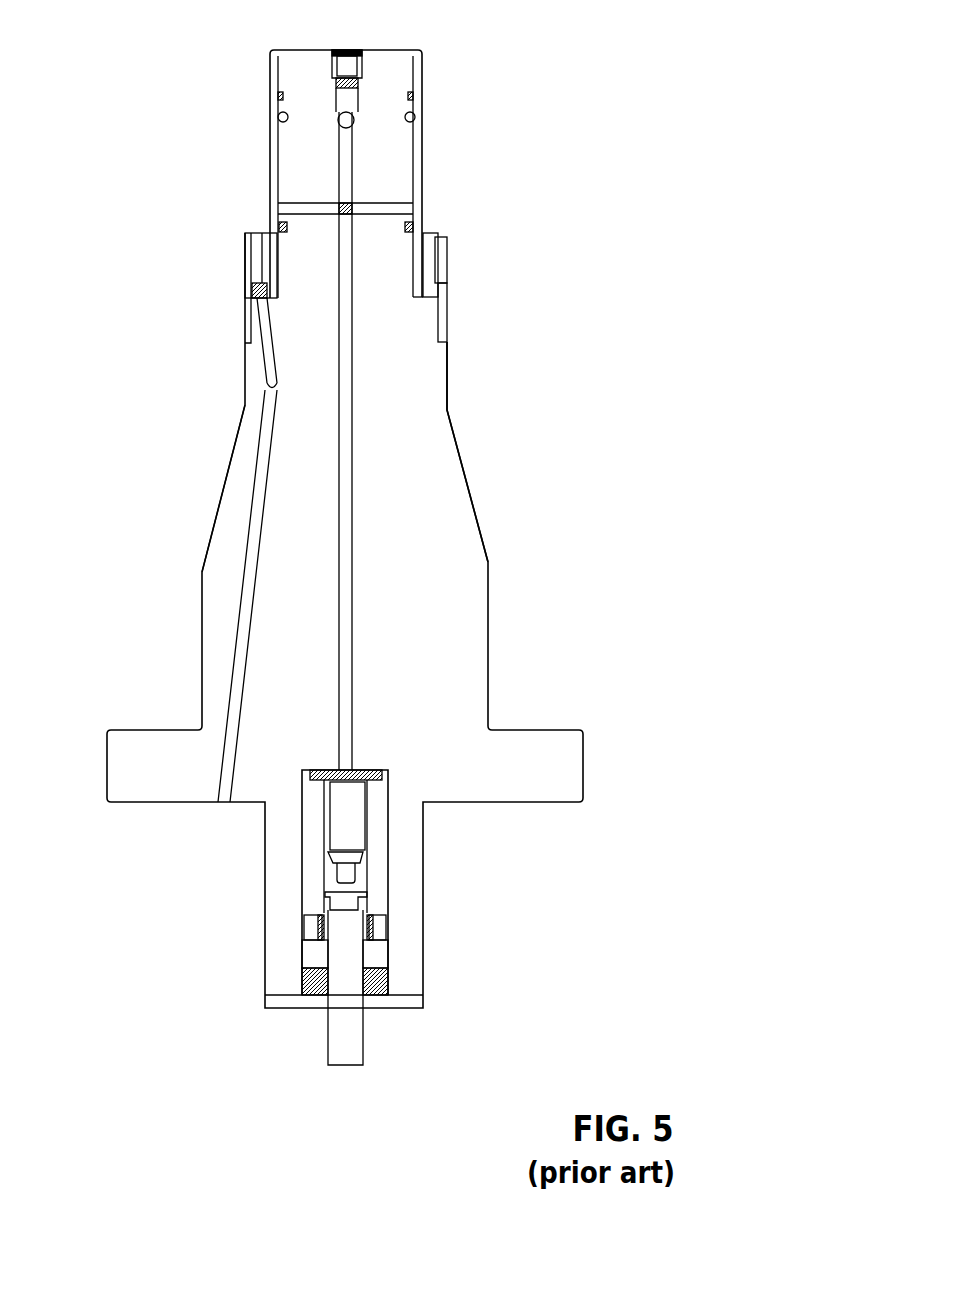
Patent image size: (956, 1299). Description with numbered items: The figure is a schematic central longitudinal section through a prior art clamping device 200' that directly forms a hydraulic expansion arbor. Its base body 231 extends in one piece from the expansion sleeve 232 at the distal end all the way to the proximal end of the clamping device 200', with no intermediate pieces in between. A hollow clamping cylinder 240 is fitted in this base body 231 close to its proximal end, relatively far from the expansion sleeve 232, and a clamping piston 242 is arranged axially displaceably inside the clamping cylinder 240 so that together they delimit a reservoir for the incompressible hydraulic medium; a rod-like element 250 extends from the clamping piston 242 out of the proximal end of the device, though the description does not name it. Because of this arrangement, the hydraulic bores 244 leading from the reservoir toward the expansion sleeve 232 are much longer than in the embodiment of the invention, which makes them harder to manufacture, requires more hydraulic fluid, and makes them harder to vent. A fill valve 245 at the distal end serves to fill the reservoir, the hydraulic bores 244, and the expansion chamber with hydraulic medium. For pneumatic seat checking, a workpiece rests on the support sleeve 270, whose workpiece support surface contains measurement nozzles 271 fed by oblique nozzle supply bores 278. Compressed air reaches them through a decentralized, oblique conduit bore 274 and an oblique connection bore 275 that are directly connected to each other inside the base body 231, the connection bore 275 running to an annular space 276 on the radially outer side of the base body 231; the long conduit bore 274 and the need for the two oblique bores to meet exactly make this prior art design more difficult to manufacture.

The clamping device 200' is at (325, 531).
The base body 231 is at (418, 421).
The expansion sleeve 232 is at (420, 154).
The fill valve 245 is at (356, 117).
The hydraulic bores 244 is at (353, 566).
The measurement nozzles 271 is at (436, 232).
The nozzle supply bores 278 is at (437, 270).
The support sleeve 270 is at (444, 322).
The annular space 276 is at (253, 290).
The connection bore 275 is at (265, 358).
The conduit bore 274 is at (253, 540).
The clamping cylinder 240 is at (389, 838).
The clamping piston 242 is at (350, 900).
The piston rod 250 is at (352, 1037).